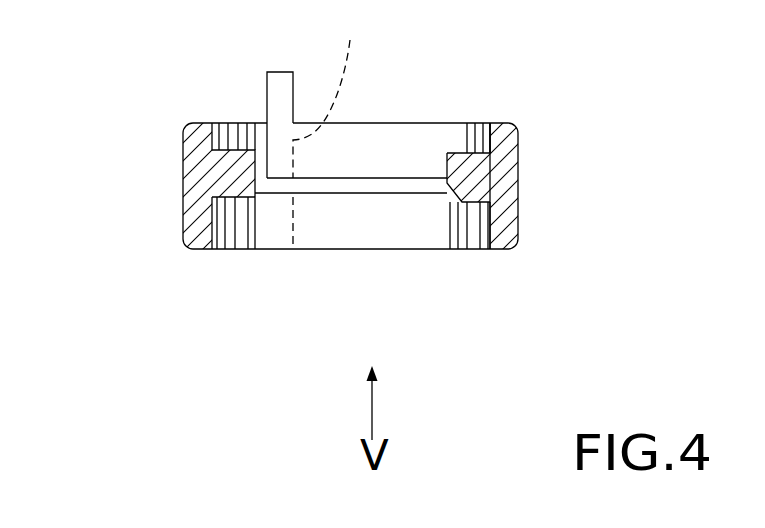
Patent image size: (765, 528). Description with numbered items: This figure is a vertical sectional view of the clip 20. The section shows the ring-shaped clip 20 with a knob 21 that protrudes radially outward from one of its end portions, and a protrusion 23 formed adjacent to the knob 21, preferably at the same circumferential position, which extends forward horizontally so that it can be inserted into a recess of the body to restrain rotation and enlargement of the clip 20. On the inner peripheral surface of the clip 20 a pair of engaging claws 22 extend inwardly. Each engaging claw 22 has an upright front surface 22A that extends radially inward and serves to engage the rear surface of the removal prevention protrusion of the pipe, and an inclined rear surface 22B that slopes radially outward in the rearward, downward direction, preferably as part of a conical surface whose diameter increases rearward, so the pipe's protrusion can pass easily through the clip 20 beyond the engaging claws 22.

The clip 20 is at (162, 186).
The knob 21 is at (331, 124).
The engaging claws 22 is at (353, 362).
The front surface 22A is at (235, 148).
The rear surface 22B is at (250, 200).
The protrusion 23 is at (280, 96).